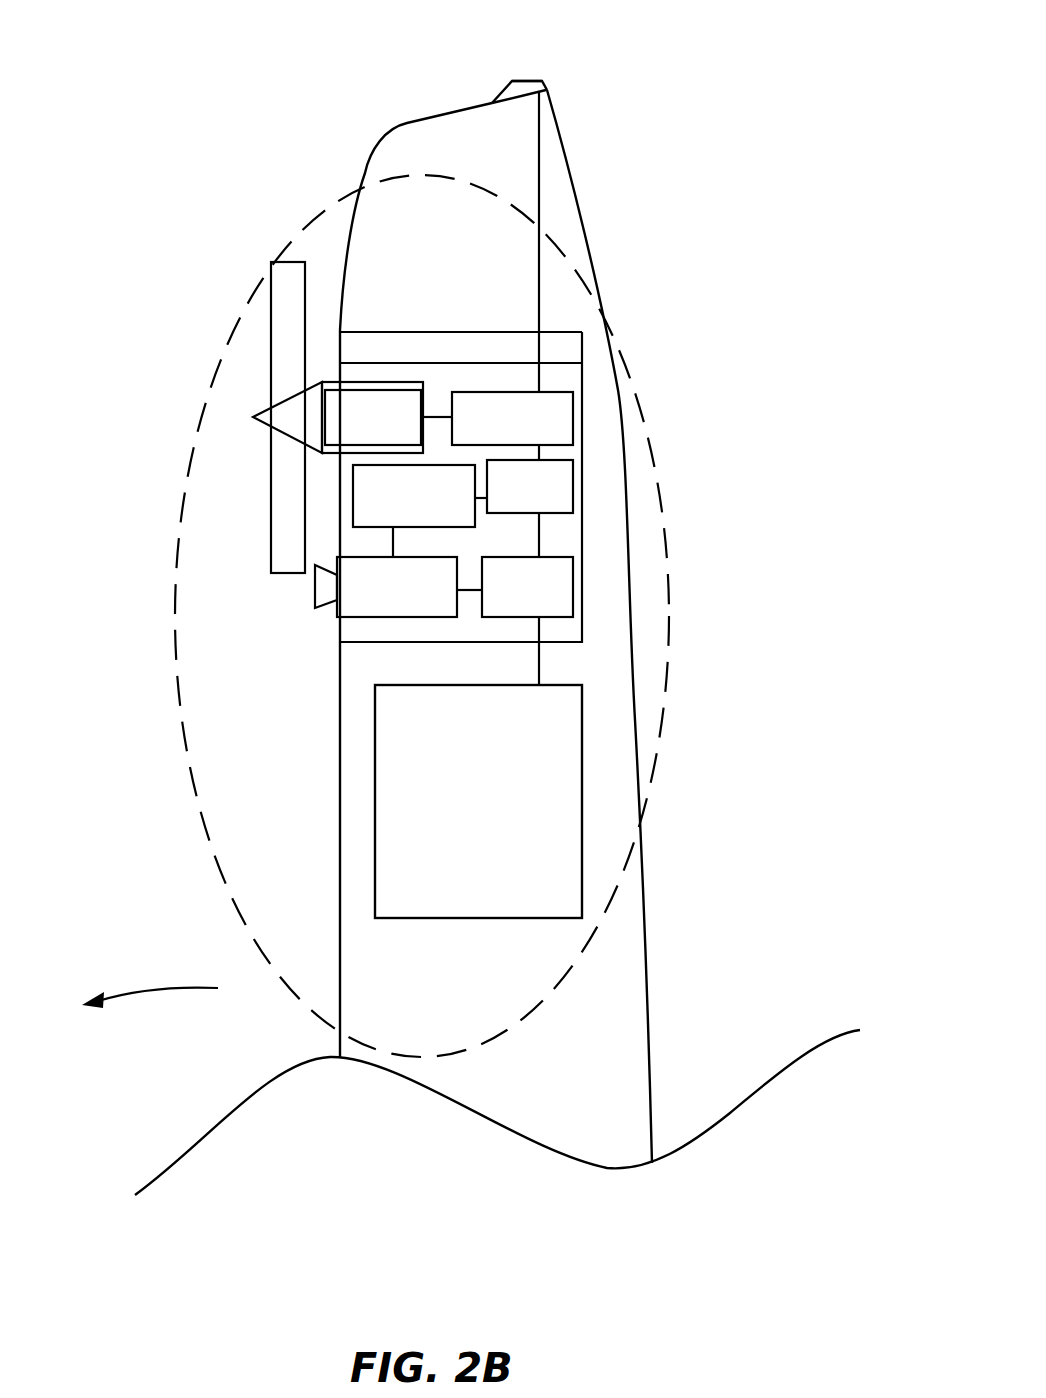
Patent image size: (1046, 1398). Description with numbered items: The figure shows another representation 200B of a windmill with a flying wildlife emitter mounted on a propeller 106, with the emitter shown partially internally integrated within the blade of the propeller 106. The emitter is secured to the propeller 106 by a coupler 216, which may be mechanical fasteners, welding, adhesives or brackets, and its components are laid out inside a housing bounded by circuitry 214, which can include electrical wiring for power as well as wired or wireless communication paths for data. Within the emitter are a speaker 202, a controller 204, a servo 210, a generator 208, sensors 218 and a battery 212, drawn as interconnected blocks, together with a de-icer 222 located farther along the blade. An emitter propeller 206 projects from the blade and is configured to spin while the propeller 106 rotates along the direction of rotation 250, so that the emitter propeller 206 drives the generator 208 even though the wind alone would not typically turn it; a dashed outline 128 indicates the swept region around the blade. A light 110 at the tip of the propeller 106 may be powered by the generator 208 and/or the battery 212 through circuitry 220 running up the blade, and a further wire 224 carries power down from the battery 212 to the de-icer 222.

The wind turbine blade system 200B is at (140, 129).
The propeller 106 is at (560, 137).
The light 110 is at (512, 81).
The rotor zone 128 is at (623, 363).
The circuitry 214 is at (573, 520).
The coupler 216 is at (565, 330).
The circuitry 220 is at (539, 175).
The de-icer wire 224 is at (539, 663).
The emitter propeller 206 is at (270, 343).
The servo 210 is at (352, 417).
The generator 208 is at (512, 418).
The sensors 218 is at (524, 486).
The controller 204 is at (414, 511).
The speaker 202 is at (398, 587).
The battery 212 is at (527, 587).
The de-icer 222 is at (478, 801).
The direction of rotation 250 is at (143, 956).